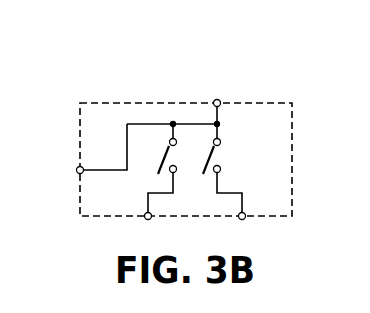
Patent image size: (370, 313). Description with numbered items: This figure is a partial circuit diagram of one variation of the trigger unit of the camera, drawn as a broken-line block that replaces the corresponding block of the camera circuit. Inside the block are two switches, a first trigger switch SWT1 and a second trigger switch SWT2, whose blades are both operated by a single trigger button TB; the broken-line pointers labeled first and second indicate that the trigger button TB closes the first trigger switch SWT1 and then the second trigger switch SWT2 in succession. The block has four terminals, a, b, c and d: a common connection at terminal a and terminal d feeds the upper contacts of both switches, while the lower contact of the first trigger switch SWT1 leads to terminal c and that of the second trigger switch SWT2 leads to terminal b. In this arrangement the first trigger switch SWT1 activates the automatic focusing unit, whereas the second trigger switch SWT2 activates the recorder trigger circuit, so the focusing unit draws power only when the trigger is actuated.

The trigger button TB is at (202, 150).
The first trigger switch SWT1 is at (157, 162).
The second trigger switch SWT2 is at (250, 144).
The terminal a is at (217, 99).
The terminal b is at (233, 208).
The terminal c is at (159, 208).
The terminal d is at (94, 152).